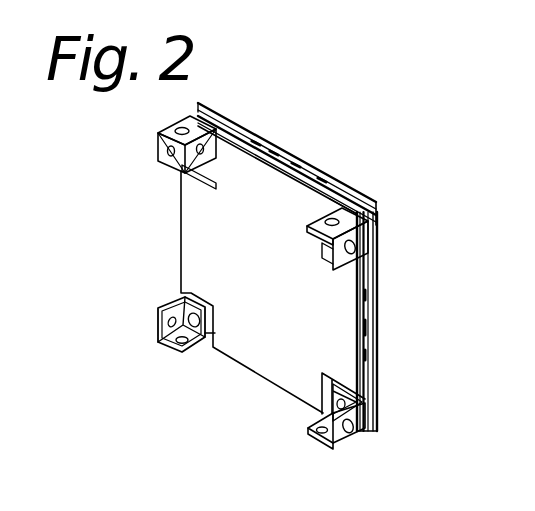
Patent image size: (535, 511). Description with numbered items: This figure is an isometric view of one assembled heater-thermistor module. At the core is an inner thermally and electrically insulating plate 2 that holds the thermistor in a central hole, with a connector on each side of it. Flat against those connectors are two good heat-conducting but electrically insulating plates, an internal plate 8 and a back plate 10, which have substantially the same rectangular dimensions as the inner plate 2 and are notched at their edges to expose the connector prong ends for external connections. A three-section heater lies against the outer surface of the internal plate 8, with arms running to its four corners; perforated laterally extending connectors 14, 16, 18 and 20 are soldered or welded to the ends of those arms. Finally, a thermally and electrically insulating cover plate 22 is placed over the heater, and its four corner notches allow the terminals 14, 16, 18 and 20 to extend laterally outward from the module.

The inner thermally and electrically insulating plate 2 is at (340, 196).
The internal plate 8 is at (357, 262).
The back plate 10 is at (312, 180).
The laterally extending connector 14 is at (347, 223).
The laterally extending connector 16 is at (340, 440).
The laterally extending connector 18 is at (190, 352).
The laterally extending connector 20 is at (162, 132).
The cover plate 22 is at (196, 226).